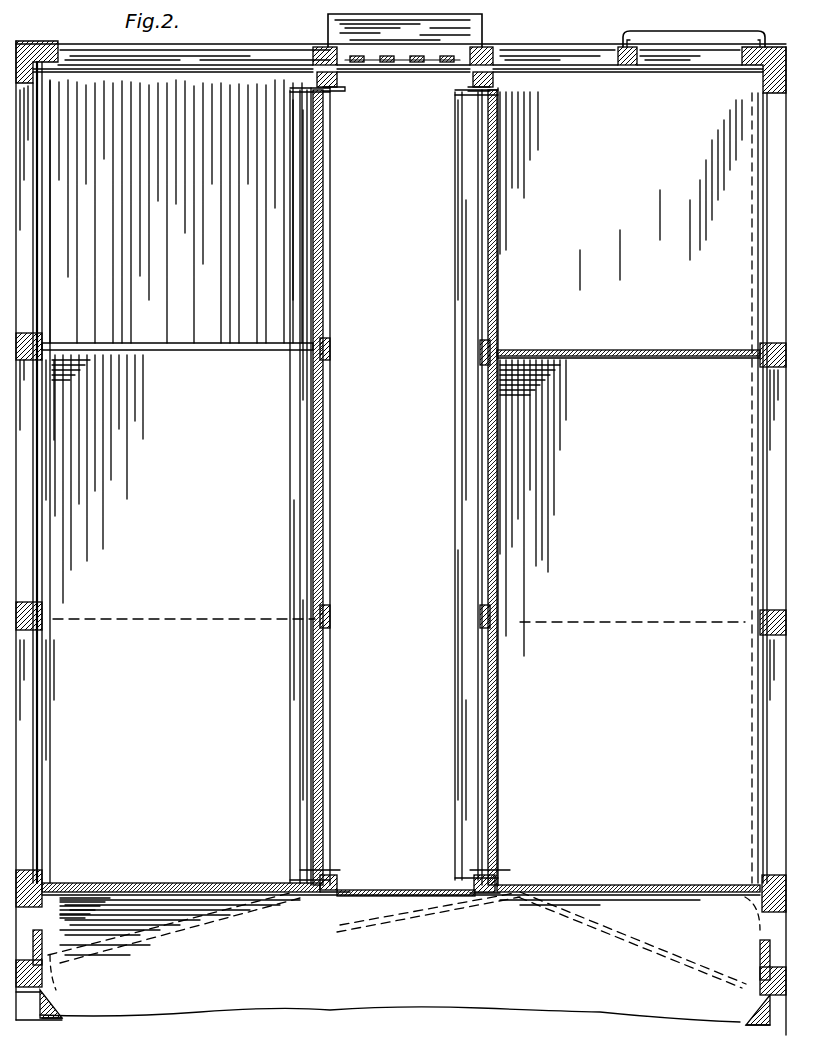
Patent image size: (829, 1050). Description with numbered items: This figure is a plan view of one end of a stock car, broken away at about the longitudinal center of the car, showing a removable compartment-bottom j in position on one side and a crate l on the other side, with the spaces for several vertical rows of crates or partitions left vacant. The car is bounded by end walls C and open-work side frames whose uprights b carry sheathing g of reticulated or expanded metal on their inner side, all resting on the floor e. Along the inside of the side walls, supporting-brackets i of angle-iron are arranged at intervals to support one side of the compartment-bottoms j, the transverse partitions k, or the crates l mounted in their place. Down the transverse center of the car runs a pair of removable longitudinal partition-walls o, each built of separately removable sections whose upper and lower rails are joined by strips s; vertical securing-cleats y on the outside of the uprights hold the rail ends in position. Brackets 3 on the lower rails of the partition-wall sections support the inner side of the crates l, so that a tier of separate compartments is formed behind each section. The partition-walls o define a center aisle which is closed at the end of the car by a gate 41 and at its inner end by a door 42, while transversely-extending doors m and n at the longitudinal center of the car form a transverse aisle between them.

The gate 41 is at (412, 62).
The door 42 is at (400, 888).
The brackets 3 is at (310, 787).
The vertical securing-cleats y is at (330, 85).
The end walls C is at (590, 70).
The crates l is at (192, 327).
The strips s is at (338, 352).
The longitudinal partition-walls o is at (487, 513).
The uprights b is at (782, 352).
The sheathing g is at (35, 784).
The transverse partitions k is at (683, 358).
The compartment-bottoms j is at (700, 280).
The floor e is at (399, 707).
The supporting-brackets i is at (50, 826).
The door m is at (228, 895).
The door n is at (62, 1004).